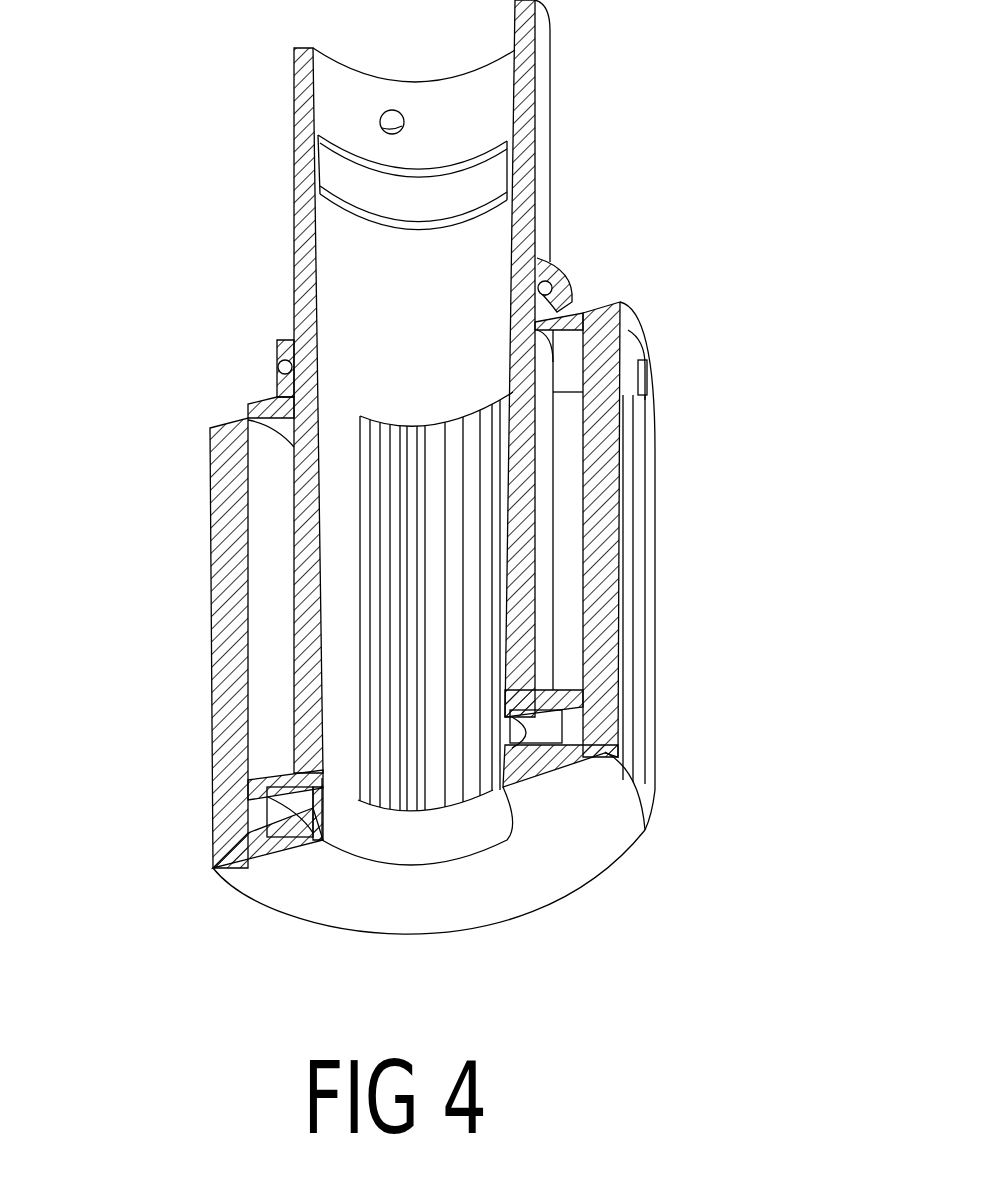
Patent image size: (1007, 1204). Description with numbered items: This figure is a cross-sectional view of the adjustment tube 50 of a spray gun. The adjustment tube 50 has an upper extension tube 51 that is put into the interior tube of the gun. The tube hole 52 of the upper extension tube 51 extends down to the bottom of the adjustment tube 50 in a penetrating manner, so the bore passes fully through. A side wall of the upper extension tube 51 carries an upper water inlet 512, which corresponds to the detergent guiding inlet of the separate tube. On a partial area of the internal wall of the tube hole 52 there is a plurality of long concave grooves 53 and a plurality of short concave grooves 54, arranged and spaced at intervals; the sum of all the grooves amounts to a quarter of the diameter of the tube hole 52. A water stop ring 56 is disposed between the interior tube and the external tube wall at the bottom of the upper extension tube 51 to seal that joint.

The adjustment tube 50 is at (577, 820).
The upper extension tube 51 is at (545, 101).
The upper water inlet 512 is at (383, 118).
The tube hole 52 is at (375, 255).
The long concave grooves 53 is at (425, 498).
The short concave grooves 54 is at (407, 657).
The water stop ring 56 is at (277, 363).